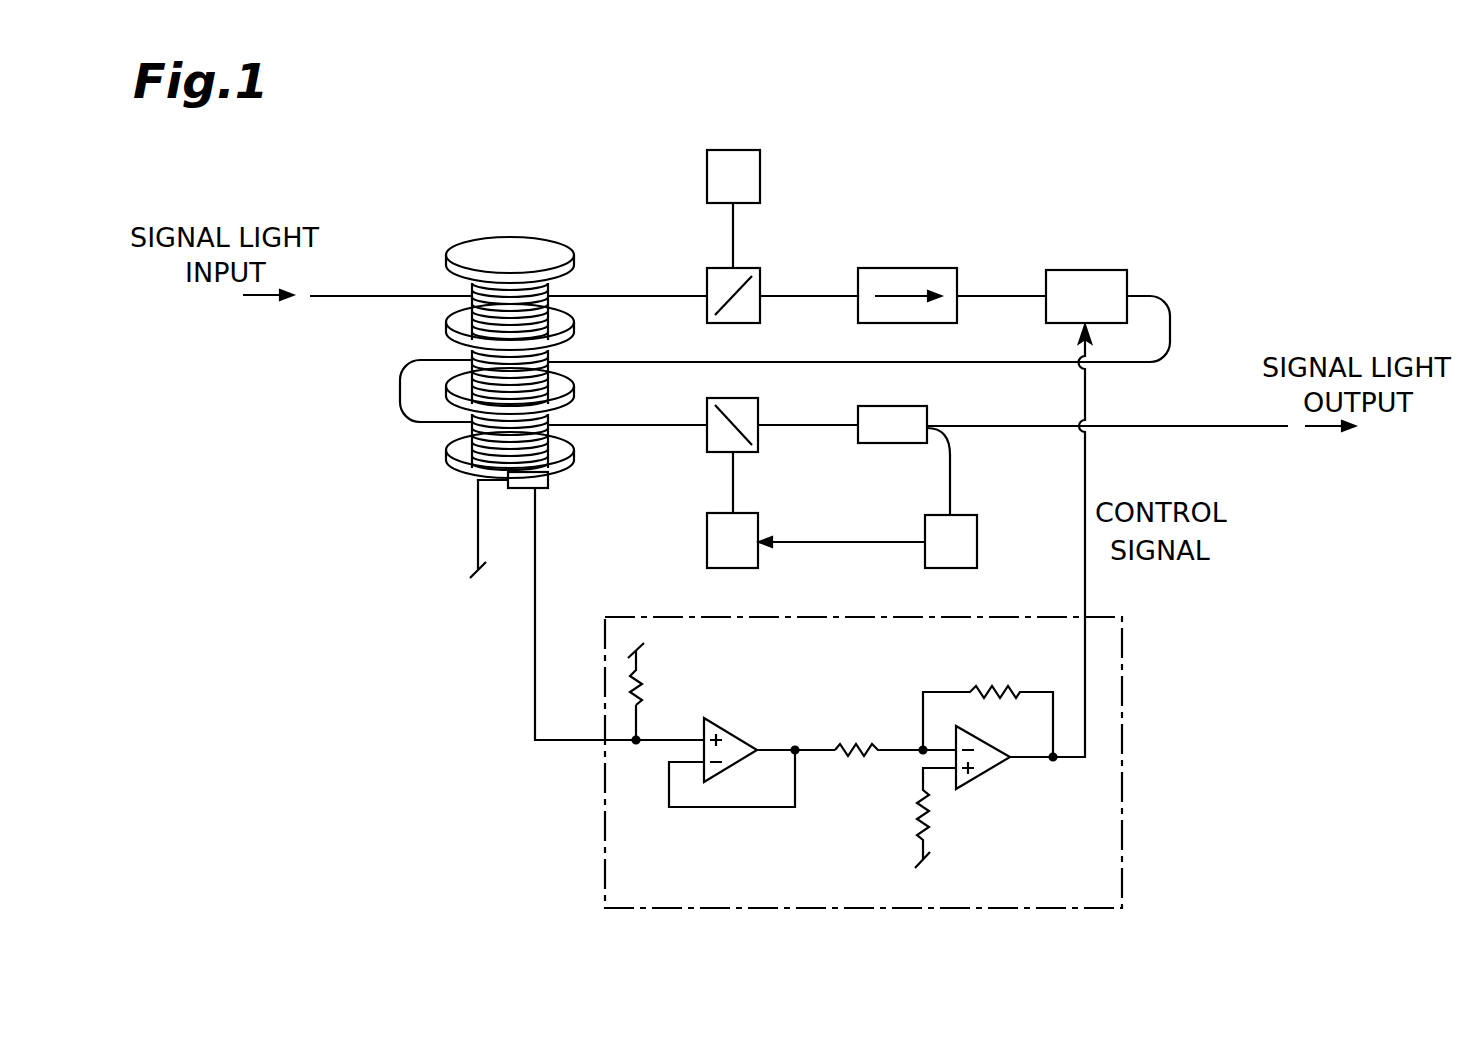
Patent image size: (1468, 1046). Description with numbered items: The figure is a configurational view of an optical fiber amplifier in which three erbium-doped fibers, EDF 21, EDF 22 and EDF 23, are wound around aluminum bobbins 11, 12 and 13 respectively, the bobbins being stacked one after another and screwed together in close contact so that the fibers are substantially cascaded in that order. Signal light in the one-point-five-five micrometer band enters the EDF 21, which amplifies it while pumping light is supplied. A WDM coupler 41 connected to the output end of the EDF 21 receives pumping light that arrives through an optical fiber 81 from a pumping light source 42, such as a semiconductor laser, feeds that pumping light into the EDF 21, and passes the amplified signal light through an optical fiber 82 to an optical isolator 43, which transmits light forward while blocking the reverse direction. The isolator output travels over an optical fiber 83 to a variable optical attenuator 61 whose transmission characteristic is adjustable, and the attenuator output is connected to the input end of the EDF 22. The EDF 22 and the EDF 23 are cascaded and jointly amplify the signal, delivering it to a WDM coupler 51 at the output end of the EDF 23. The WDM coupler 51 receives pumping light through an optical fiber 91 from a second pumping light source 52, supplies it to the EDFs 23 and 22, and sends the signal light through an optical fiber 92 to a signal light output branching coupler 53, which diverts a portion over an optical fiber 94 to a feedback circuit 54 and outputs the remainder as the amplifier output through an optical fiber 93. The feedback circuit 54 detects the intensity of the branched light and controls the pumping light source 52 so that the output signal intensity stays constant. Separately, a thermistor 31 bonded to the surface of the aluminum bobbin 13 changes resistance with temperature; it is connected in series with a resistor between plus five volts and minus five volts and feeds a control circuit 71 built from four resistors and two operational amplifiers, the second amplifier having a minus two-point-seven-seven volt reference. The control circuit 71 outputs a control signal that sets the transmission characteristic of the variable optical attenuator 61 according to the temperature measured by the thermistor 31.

The aluminum bobbin 11 is at (447, 313).
The aluminum bobbin 12 is at (567, 385).
The aluminum bobbin 13 is at (447, 440).
The EDF 21 is at (562, 288).
The EDF 22 is at (562, 358).
The EDF 23 is at (562, 425).
The thermistor 31 is at (548, 488).
The WDM coupler 41 is at (762, 283).
The pumping light source 42 is at (762, 172).
The optical isolator 43 is at (905, 268).
The WDM coupler 51 is at (750, 452).
The pumping light source 52 is at (745, 568).
The signal light output branching coupler 53 is at (892, 443).
The feedback circuit 54 is at (965, 568).
The variable optical attenuator 61 is at (1075, 270).
The control circuit 71 is at (1125, 733).
The optical fiber 81 is at (728, 242).
The optical fiber 82 is at (812, 300).
The optical fiber 83 is at (995, 300).
The optical fiber 91 is at (728, 488).
The optical fiber 92 is at (792, 425).
The optical fiber 93 is at (988, 425).
The optical fiber 94 is at (952, 488).